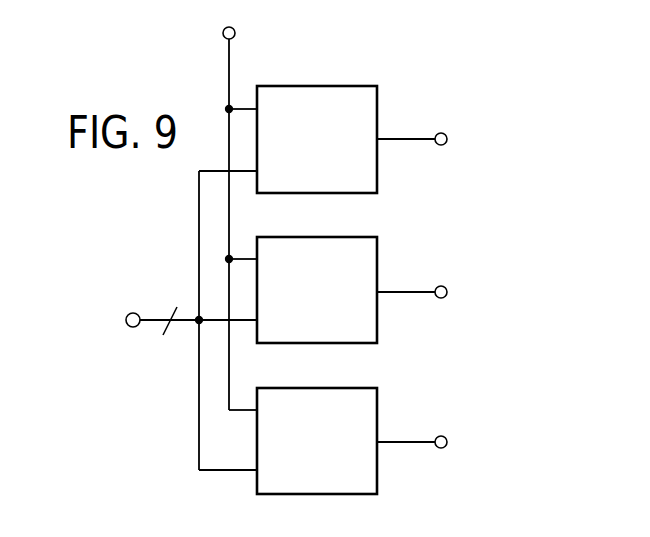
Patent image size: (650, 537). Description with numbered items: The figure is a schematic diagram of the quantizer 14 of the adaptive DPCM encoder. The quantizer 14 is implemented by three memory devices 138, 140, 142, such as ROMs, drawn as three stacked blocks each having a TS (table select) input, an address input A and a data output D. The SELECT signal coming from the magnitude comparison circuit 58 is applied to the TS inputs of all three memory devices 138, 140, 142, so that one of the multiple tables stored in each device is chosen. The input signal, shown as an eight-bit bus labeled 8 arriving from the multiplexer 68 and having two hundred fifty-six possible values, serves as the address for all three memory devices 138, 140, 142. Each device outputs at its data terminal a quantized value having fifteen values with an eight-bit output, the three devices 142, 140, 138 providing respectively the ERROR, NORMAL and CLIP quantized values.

The quantizer 14 is at (466, 72).
The magnitude comparison circuit 58 is at (267, 206).
The multiplexer 68 is at (150, 334).
The 8-bit data bus 8 is at (165, 315).
The memory device 142 is at (379, 100).
The memory device 140 is at (379, 251).
The memory device 138 is at (379, 402).